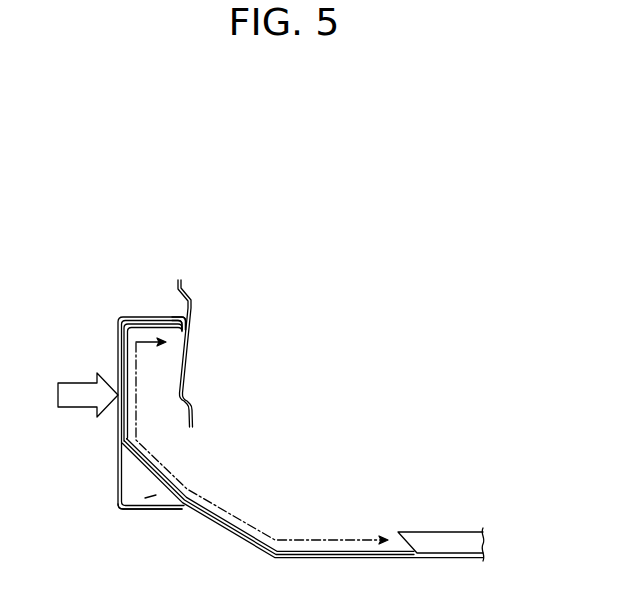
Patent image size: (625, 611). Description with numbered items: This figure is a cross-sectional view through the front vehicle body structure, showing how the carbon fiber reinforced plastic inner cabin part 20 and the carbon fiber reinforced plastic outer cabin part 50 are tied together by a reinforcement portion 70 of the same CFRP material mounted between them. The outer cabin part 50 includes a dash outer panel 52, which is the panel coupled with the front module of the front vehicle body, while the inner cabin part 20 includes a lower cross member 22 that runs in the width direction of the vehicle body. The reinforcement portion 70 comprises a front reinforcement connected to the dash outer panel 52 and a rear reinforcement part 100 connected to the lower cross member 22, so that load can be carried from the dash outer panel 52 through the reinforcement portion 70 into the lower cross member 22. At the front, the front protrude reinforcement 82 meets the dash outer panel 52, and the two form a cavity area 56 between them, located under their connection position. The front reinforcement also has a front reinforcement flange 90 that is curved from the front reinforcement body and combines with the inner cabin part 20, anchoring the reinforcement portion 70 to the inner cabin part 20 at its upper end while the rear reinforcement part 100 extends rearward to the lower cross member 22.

The inner cabin part 20 is at (190, 362).
The lower cross member 22 is at (438, 540).
The outer cabin part 50 is at (253, 444).
The dash outer panel 52 is at (118, 498).
The cavity area 56 is at (152, 497).
The reinforcement portion 70 is at (128, 470).
The front protrude reinforcement 82 is at (123, 434).
The front reinforcement flange 90 is at (183, 324).
The rear reinforcement part 100 is at (335, 550).